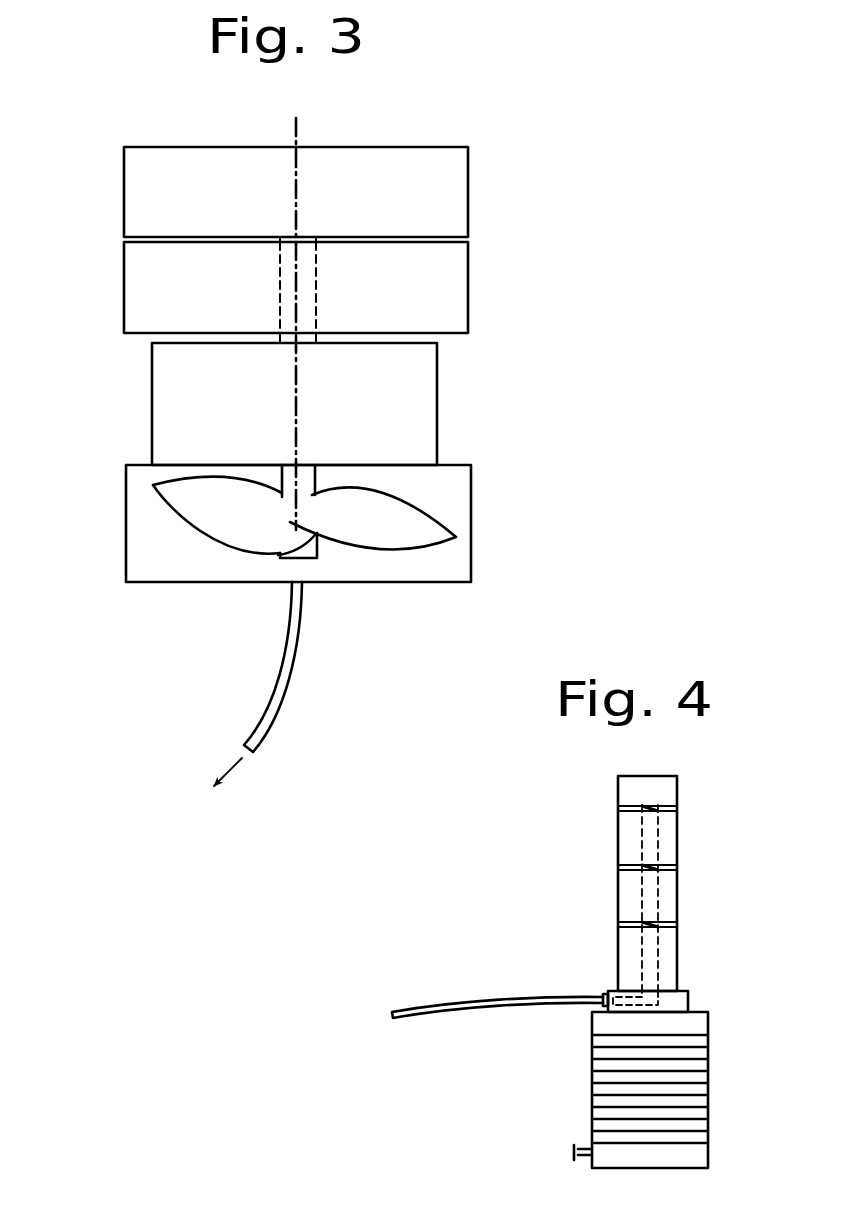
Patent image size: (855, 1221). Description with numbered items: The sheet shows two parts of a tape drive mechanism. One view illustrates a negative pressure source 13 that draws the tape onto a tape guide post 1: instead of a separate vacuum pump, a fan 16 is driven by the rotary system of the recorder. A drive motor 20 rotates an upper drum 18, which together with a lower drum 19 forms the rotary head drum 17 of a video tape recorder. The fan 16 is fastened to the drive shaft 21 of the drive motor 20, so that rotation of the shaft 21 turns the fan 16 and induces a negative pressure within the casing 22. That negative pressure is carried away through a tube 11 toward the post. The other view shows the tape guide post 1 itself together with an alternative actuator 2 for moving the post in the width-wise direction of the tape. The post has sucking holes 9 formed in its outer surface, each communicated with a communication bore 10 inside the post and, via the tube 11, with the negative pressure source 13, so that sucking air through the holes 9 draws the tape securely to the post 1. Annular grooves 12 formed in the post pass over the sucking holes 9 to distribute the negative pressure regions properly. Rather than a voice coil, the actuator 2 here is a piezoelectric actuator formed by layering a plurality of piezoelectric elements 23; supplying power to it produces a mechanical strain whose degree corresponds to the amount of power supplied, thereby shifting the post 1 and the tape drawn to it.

In FIG. 4, the tape guide post 1 is at (667, 832).
In FIG. 4, the actuator 2 is at (646, 1079).
In FIG. 4, the sucking holes 9 is at (641, 805).
In FIG. 3, the communication bore 10 is at (213, 787).
In FIG. 4, the communication bore 10 is at (657, 965).
In FIG. 3, the tube 11 is at (290, 662).
In FIG. 4, the tube 11 is at (472, 998).
In FIG. 4, the annular grooves 12 is at (618, 922).
In FIG. 3, the negative pressure source 13 is at (327, 467).
In FIG. 3, the fan 16 is at (443, 538).
In FIG. 3, the rotary head drum 17 is at (363, 245).
In FIG. 3, the upper drum 18 is at (455, 195).
In FIG. 3, the lower drum 19 is at (329, 290).
In FIG. 3, the drive motor 20 is at (425, 412).
In FIG. 3, the drive shaft 21 is at (282, 468).
In FIG. 3, the casing 22 is at (472, 520).
In FIG. 4, the piezoelectric elements 23 is at (706, 1037).